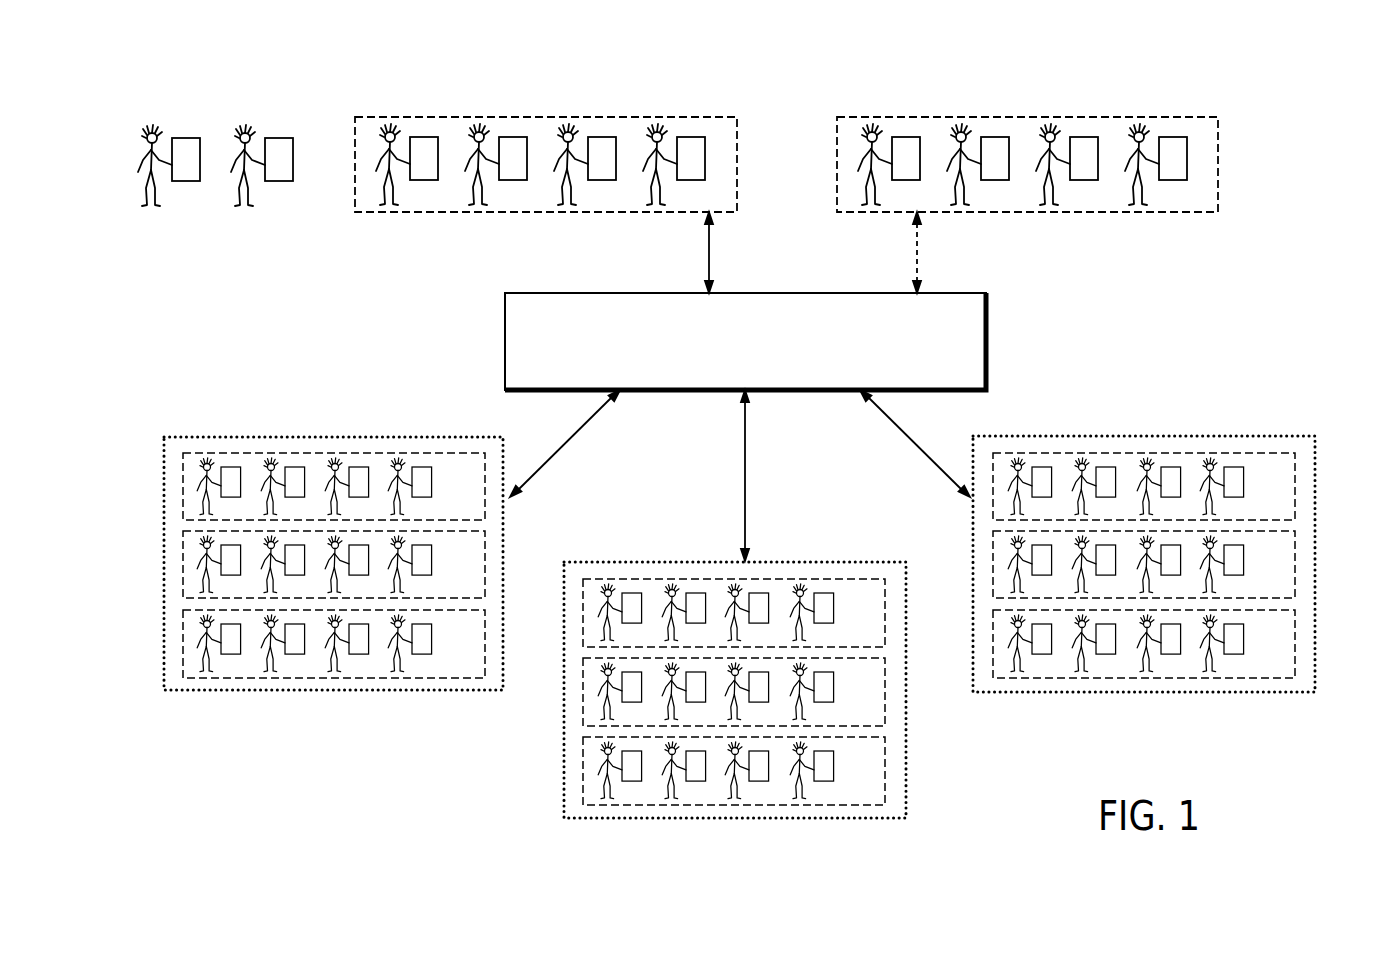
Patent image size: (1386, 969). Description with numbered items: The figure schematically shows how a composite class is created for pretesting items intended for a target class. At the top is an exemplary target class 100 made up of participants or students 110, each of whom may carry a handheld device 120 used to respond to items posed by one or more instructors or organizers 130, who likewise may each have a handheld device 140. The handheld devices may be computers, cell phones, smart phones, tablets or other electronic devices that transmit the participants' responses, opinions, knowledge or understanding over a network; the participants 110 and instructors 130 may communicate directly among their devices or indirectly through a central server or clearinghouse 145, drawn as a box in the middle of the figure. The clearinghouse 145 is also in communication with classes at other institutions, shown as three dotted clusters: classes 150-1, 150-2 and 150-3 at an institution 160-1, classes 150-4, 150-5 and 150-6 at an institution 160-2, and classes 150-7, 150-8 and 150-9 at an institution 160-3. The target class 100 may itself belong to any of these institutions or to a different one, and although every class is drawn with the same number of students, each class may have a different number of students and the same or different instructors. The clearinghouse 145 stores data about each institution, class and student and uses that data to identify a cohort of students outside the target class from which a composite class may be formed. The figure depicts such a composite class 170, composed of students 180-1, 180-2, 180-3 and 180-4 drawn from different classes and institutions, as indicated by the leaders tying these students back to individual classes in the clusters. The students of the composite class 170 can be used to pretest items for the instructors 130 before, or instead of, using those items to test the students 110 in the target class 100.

The class 100 is at (566, 167).
The participants or students 110 is at (390, 210).
The handheld device 120 is at (425, 137).
The instructors or organizers 130 is at (215, 162).
The handheld device 140 is at (186, 181).
The central server or clearinghouse 145 is at (986, 338).
The composite class 170 is at (1218, 117).
The student 180-1 is at (872, 125).
The student 180-2 is at (961, 125).
The student 180-3 is at (1050, 125).
The student 180-4 is at (1139, 125).
The institution 160-1 is at (299, 536).
The institution 160-2 is at (771, 664).
The institution 160-3 is at (1179, 537).
The class 150-1 is at (183, 487).
The class 150-2 is at (183, 565).
The class 150-3 is at (183, 644).
The class 150-4 is at (885, 623).
The class 150-5 is at (885, 705).
The class 150-6 is at (885, 775).
The class 150-7 is at (1295, 503).
The class 150-8 is at (1295, 563).
The class 150-9 is at (1295, 638).